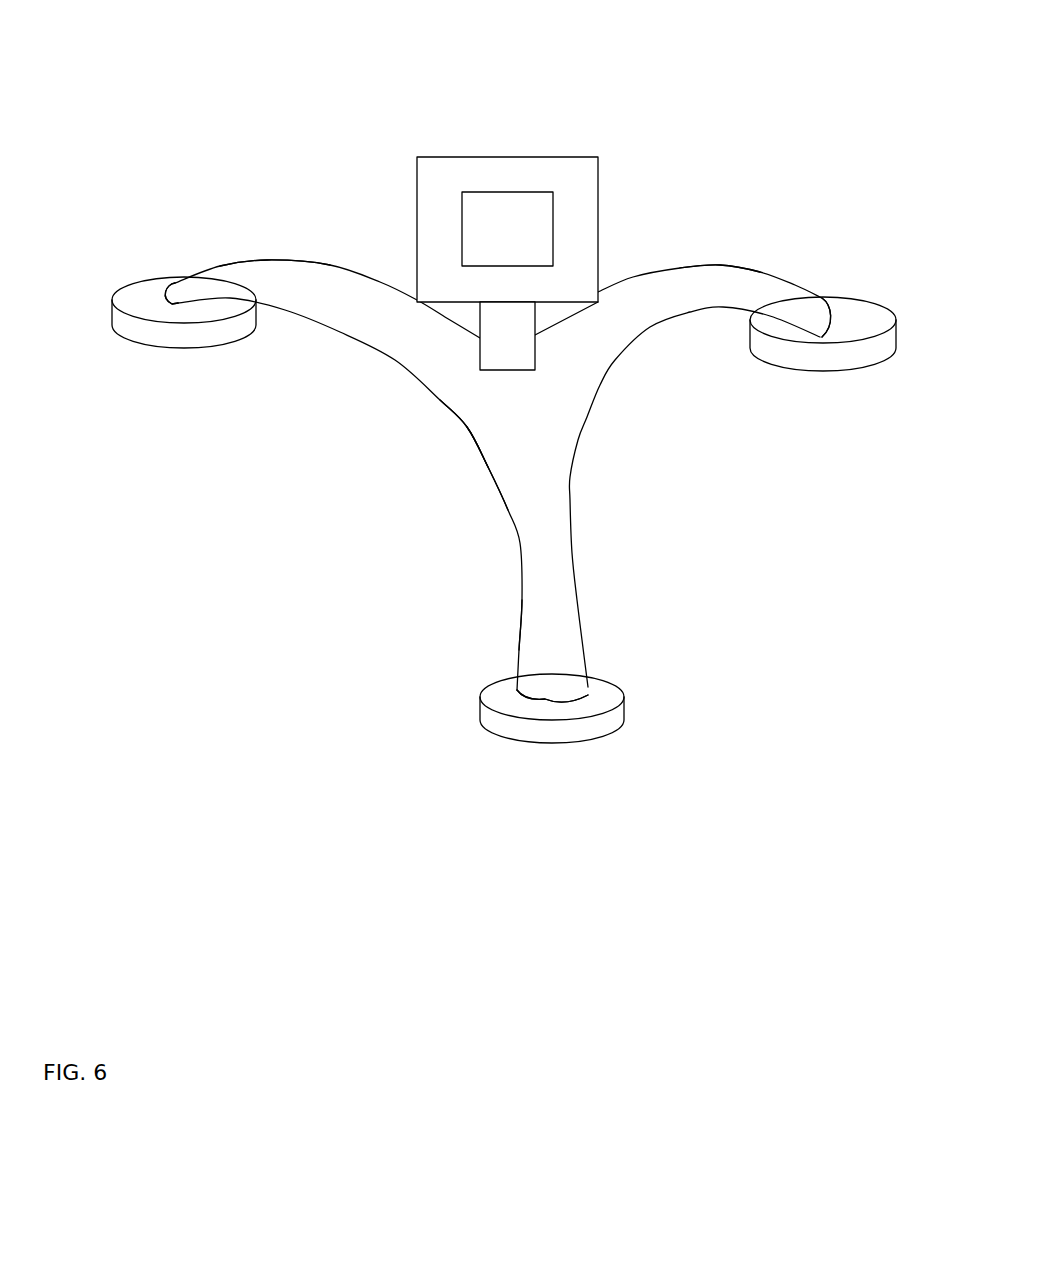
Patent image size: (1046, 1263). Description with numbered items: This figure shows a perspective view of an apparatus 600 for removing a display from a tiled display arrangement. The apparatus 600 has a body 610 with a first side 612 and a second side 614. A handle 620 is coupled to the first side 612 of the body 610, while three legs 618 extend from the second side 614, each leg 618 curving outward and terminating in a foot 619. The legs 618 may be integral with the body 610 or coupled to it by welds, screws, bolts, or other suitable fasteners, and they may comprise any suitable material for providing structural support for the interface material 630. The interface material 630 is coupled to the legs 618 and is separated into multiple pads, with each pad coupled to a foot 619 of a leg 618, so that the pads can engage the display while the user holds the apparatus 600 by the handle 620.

The apparatus 600 is at (272, 73).
The body 610 is at (587, 338).
The first side 612 is at (507, 417).
The second side 614 is at (487, 467).
The leg 618 is at (292, 285).
The foot 619 is at (182, 290).
The handle 620 is at (443, 211).
The interface material 630 is at (157, 330).